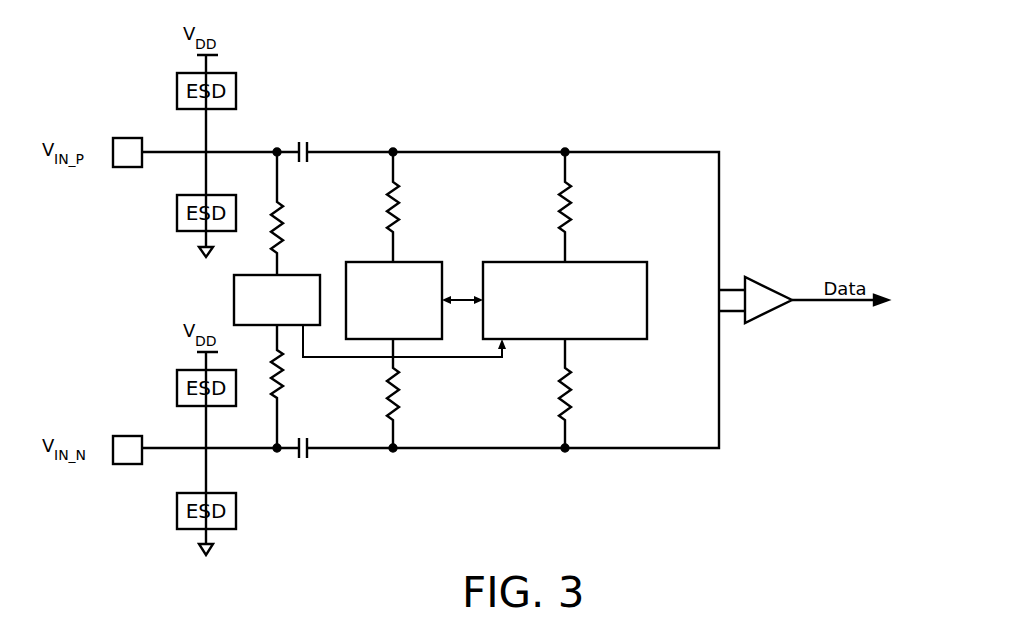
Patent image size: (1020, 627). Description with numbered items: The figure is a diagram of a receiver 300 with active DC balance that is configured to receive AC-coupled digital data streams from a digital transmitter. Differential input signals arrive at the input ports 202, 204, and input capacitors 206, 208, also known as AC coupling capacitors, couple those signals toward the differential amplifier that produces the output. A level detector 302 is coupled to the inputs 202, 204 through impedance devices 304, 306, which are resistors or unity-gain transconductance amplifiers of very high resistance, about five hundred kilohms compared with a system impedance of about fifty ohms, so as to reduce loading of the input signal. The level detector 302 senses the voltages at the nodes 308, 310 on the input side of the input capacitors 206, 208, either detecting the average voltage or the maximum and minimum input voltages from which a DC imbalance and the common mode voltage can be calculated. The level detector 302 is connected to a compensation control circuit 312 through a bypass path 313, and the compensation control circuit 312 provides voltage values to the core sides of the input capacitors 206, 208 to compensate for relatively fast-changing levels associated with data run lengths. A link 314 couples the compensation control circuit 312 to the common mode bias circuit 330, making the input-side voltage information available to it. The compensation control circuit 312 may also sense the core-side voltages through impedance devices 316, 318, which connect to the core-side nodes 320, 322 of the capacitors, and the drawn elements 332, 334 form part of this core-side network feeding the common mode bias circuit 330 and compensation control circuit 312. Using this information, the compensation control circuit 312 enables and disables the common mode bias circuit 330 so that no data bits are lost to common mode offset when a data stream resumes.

The receiver 300 is at (775, 112).
The input port 202 is at (127, 138).
The input port 204 is at (127, 436).
The input capacitor 206 is at (311, 148).
The input capacitor 208 is at (311, 454).
The level detector 302 is at (234, 298).
The impedance device 304 is at (284, 228).
The impedance device 306 is at (284, 386).
The node 308 is at (277, 148).
The node 310 is at (277, 453).
The compensation control circuit 312 is at (598, 262).
The bypass path 313 is at (484, 358).
The link 314 is at (457, 297).
The impedance device 316 is at (572, 207).
The impedance device 318 is at (572, 393).
The node 320 is at (393, 148).
The node 322 is at (393, 453).
The common mode bias circuit 330 is at (418, 262).
The resistor 332 is at (400, 393).
The resistor 334 is at (400, 207).